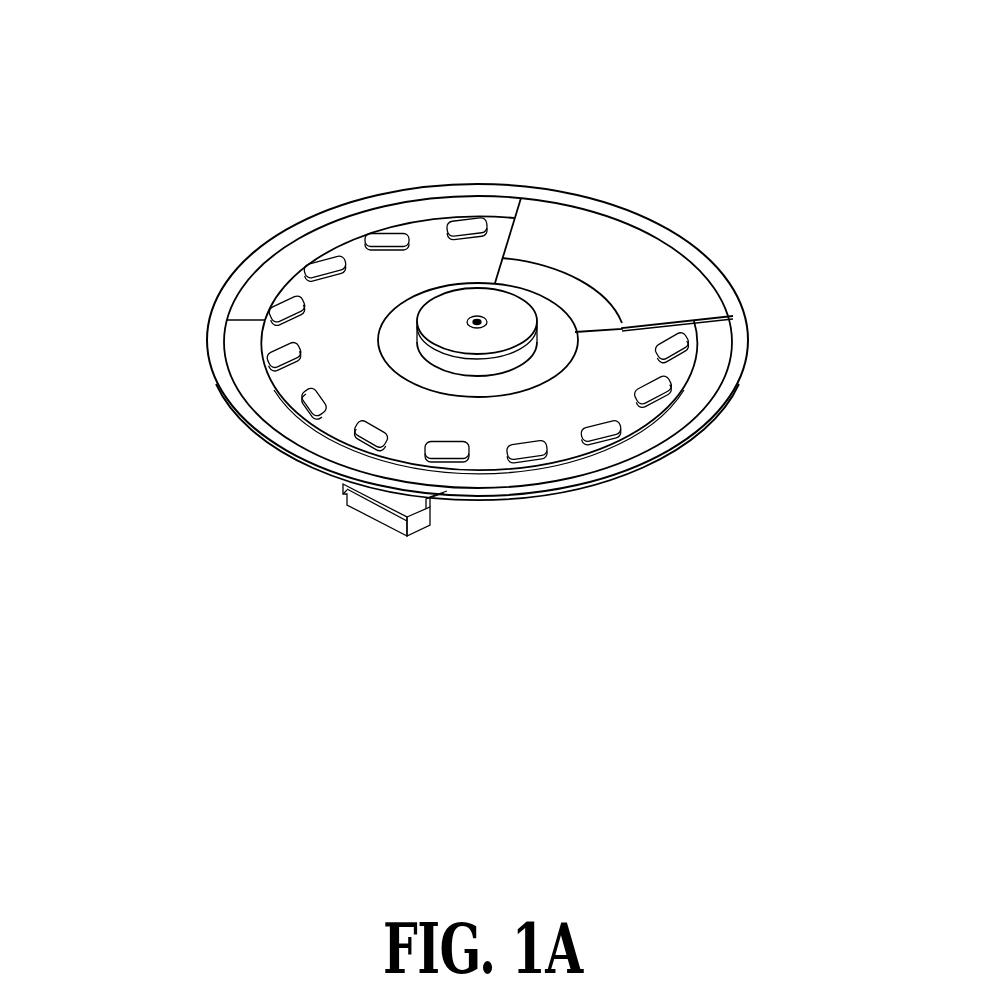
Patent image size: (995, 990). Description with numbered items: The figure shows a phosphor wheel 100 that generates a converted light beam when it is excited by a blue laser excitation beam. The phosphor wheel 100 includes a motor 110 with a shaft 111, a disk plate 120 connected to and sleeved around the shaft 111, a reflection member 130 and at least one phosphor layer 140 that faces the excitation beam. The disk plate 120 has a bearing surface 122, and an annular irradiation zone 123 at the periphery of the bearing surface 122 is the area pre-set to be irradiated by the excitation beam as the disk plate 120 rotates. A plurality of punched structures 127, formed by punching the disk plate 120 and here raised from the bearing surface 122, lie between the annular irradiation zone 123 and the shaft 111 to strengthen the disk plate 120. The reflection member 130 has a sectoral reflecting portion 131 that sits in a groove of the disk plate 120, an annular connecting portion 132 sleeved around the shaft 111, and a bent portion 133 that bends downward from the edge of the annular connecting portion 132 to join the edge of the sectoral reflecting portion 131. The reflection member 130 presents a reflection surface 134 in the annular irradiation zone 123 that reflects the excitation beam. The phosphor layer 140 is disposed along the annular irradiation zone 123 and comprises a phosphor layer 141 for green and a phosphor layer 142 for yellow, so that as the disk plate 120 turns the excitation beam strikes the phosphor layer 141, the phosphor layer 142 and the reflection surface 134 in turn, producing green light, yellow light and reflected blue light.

The phosphor wheel 100 is at (190, 54).
The motor 110 is at (491, 218).
The shaft 111 is at (507, 316).
The disk plate 120 is at (716, 421).
The bearing surface 122 is at (607, 372).
The annular irradiation zone 123 is at (545, 488).
The punched structure 127 is at (543, 452).
The reflection member 130 is at (793, 72).
The sectoral reflecting portion 131 is at (620, 243).
The annular connecting portion 132 is at (550, 286).
The bent portion 133 is at (627, 332).
The reflection surface 134 is at (688, 295).
The phosphor layer 140 is at (359, 288).
The phosphor layer for green 141 is at (369, 214).
The phosphor layer for yellow 142 is at (262, 393).